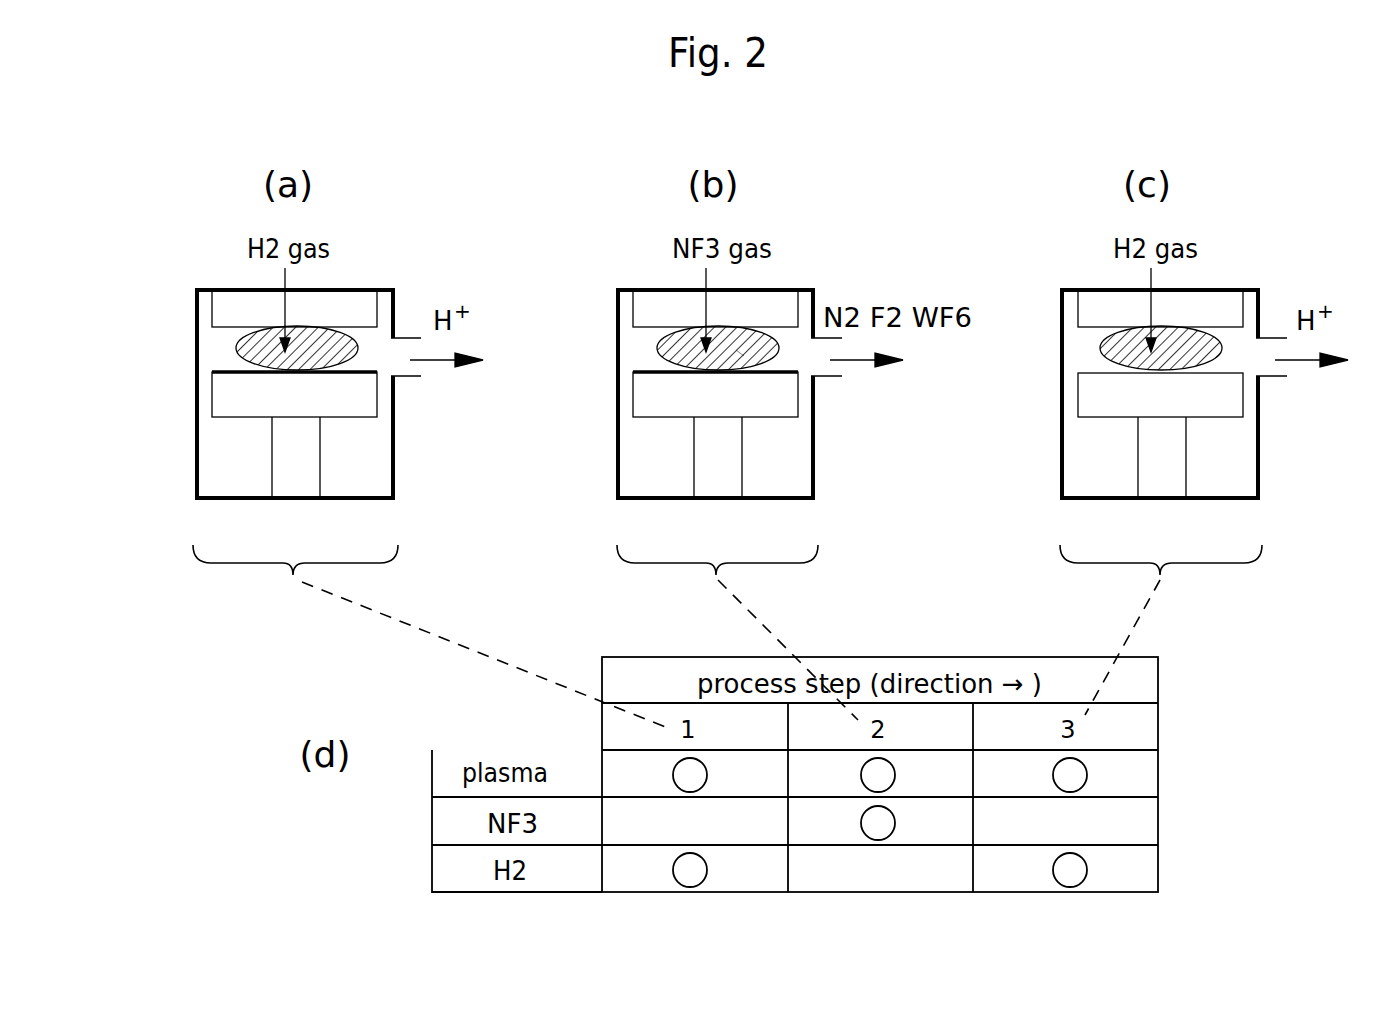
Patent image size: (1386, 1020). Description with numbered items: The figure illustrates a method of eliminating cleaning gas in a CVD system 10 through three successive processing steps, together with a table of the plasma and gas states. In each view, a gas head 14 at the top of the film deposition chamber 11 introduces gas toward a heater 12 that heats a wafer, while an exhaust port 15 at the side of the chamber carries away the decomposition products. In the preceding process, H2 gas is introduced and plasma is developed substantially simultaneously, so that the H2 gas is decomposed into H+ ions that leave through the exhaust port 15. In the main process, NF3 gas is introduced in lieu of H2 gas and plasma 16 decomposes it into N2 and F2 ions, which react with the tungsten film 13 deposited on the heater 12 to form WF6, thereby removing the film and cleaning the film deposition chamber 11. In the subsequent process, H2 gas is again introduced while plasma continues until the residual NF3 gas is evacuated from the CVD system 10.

The CVD system 10 is at (197, 457).
The film deposition chamber 11 is at (206, 343).
The heater 12 is at (211, 386).
The tungsten film 13 is at (254, 372).
The gas head 14 is at (229, 301).
The exhaust port 15 is at (402, 350).
The plasma 16 is at (740, 355).